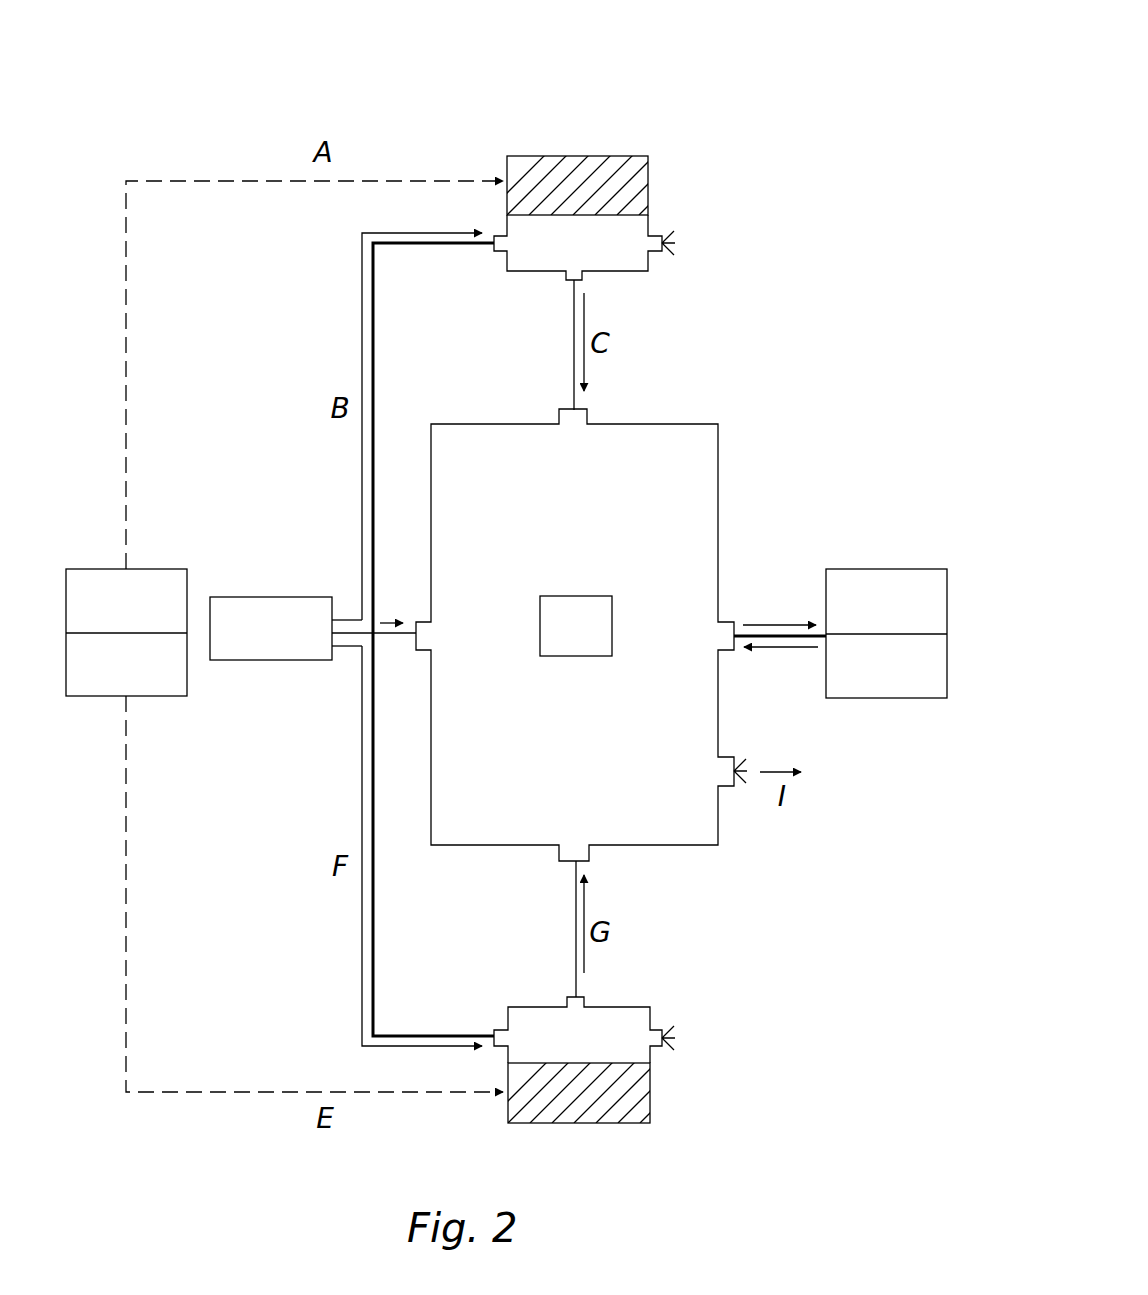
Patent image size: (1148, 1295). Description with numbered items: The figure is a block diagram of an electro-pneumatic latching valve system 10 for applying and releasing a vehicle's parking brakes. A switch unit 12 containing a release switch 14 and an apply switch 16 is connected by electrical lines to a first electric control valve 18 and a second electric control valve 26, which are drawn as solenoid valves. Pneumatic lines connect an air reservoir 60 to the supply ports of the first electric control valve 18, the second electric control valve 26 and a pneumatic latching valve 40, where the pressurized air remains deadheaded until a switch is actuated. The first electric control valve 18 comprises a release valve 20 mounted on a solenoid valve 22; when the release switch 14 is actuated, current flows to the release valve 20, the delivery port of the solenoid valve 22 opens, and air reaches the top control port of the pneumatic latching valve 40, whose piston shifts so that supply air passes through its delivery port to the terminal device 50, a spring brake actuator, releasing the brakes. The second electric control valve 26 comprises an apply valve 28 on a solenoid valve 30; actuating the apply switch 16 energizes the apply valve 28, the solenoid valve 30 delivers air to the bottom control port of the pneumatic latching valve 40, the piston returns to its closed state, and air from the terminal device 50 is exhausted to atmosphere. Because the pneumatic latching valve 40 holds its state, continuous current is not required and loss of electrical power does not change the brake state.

The electro-pneumatic latching valve system 10 is at (731, 66).
The switch unit 12 is at (63, 599).
The release switch 14 is at (188, 600).
The apply switch 16 is at (187, 673).
The first electric control valve 18 is at (704, 189).
The release valve 20 is at (557, 156).
The solenoid valve 22 is at (620, 272).
The second electric control valve 26 is at (701, 1095).
The apply valve 28 is at (625, 1123).
The solenoid valve 30 is at (638, 1007).
The pneumatic latching valve 40 is at (726, 527).
The terminal device 50 is at (890, 569).
The air reservoir 60 is at (313, 621).